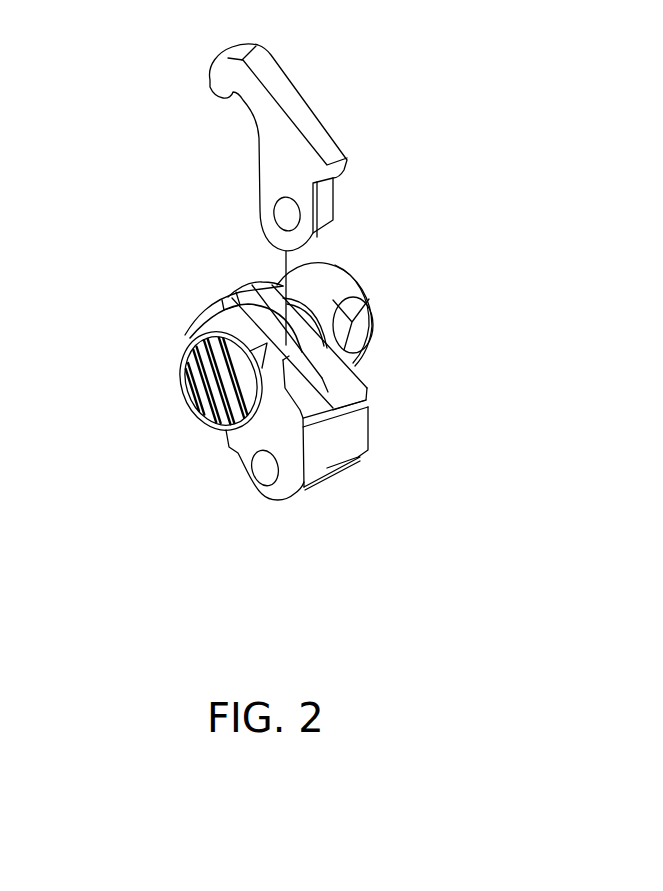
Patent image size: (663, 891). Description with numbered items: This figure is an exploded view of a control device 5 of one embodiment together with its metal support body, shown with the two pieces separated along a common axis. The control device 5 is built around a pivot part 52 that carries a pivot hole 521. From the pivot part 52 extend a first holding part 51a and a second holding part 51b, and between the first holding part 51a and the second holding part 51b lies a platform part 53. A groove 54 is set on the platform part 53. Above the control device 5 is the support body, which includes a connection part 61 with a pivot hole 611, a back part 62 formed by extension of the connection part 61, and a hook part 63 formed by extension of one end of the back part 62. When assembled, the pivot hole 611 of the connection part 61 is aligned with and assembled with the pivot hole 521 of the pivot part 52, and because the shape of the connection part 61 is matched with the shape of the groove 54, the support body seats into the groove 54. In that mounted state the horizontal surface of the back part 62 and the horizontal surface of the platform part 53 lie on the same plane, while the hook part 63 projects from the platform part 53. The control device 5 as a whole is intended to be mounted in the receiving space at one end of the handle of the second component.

The control device 5 is at (240, 375).
The first holding part 51a is at (350, 277).
The second holding part 51b is at (152, 353).
The pivot part 52 is at (300, 468).
The pivot hole 521 is at (262, 468).
The platform part 53 is at (348, 376).
The groove 54 is at (327, 388).
The connection part 61 is at (244, 136).
The pivot hole 611 is at (278, 210).
The back part 62 is at (297, 100).
The hook part 63 is at (214, 94).